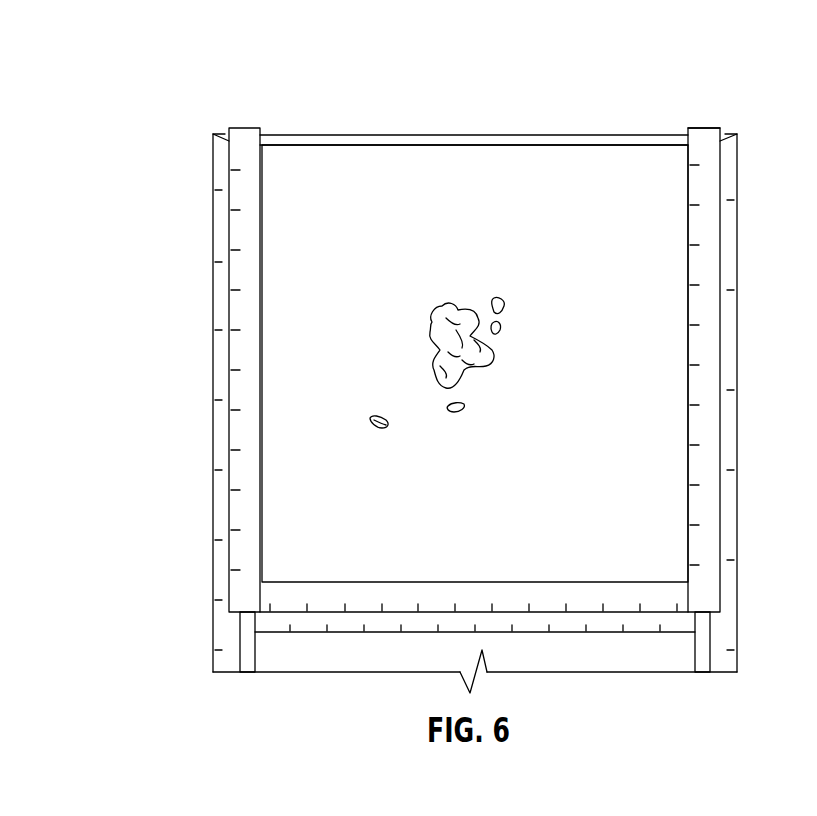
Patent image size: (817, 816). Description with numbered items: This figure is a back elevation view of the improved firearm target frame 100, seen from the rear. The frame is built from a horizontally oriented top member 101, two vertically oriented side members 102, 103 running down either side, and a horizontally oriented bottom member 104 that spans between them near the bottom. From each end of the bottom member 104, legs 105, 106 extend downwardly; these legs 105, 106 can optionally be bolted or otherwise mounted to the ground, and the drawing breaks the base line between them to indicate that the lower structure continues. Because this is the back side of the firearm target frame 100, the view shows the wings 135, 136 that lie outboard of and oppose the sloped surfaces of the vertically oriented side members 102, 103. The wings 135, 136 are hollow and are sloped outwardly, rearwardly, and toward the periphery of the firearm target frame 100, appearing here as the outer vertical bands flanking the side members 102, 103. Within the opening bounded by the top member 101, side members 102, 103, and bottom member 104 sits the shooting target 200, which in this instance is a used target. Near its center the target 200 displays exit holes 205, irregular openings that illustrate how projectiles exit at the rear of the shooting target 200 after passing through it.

The firearm target frame 100 is at (224, 68).
The top member 101 is at (565, 135).
The side member 102 is at (712, 135).
The side member 103 is at (240, 373).
The bottom member 104 is at (650, 600).
The leg 105 is at (717, 662).
The leg 106 is at (222, 662).
The wing 135 is at (728, 362).
The wing 136 is at (218, 245).
The shooting target 200 is at (305, 172).
The exit holes 205 is at (325, 476).